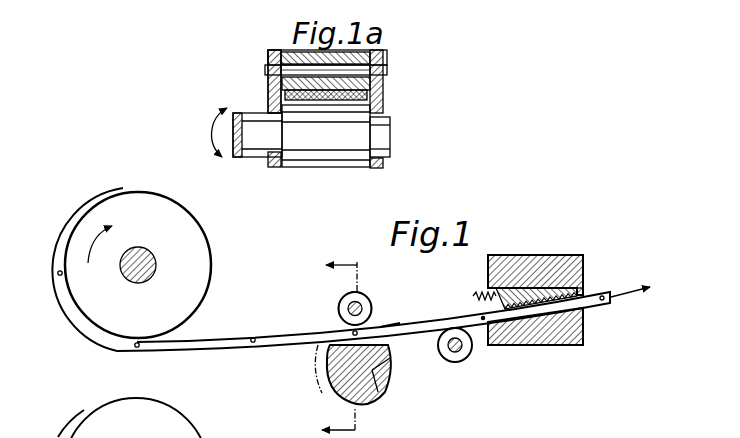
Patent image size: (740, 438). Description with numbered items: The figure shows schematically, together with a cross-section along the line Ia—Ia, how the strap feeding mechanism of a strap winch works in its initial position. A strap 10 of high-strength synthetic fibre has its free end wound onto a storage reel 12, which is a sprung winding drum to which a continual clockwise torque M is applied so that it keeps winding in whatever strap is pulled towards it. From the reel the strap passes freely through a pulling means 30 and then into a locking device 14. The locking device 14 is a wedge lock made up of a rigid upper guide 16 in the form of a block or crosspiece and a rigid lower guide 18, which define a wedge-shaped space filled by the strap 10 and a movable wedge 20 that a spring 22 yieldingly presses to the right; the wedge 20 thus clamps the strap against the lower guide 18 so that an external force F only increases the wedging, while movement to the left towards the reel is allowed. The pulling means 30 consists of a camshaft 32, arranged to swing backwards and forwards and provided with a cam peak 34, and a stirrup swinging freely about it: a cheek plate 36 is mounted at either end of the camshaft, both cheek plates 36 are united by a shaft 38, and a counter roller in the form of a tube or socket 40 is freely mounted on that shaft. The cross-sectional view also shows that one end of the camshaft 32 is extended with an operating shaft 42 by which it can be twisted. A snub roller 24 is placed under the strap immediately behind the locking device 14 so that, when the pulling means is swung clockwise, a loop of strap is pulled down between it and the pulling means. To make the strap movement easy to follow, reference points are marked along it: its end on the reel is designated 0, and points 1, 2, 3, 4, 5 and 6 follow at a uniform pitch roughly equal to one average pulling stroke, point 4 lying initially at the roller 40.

In FIG. 1, the strap end reference point 0 is at (124, 188).
In FIG. 1, the reference point 1 is at (59, 277).
In FIG. 1, the reference point 2 is at (133, 348).
In FIG. 1, the reference point 3 is at (253, 343).
In FIG. 1, the reference point 4 is at (350, 332).
In FIG. 1, the reference point 5 is at (483, 317).
In FIG. 1, the reference point 6 is at (607, 304).
In FIG. 1a, the strap 10 is at (324, 99).
In FIG. 1, the strap 10 is at (200, 340).
In FIG. 1, the storage reel 12 is at (200, 278).
In FIG. 1, the locking device 14 is at (512, 255).
In FIG. 1, the upper guide 16 is at (558, 258).
In FIG. 1, the lower guide 18 is at (556, 328).
In FIG. 1, the wedge 20 is at (546, 291).
In FIG. 1, the spring 22 is at (484, 290).
In FIG. 1, the snub roller 24 is at (462, 354).
In FIG. 1, the pulling means 30 is at (365, 262).
In FIG. 1a, the camshaft 32 is at (325, 167).
In FIG. 1, the camshaft 32 is at (374, 388).
In FIG. 1, the cam peak 34 is at (388, 365).
In FIG. 1a, the cheek plate 36 is at (267, 85).
In FIG. 1, the cheek plate 36 is at (392, 315).
In FIG. 1a, the shaft 38 is at (363, 72).
In FIG. 1, the shaft 38 is at (362, 307).
In FIG. 1a, the counter roller 40 is at (286, 53).
In FIG. 1, the counter roller 40 is at (358, 296).
In FIG. 1a, the operating shaft 42 is at (265, 138).